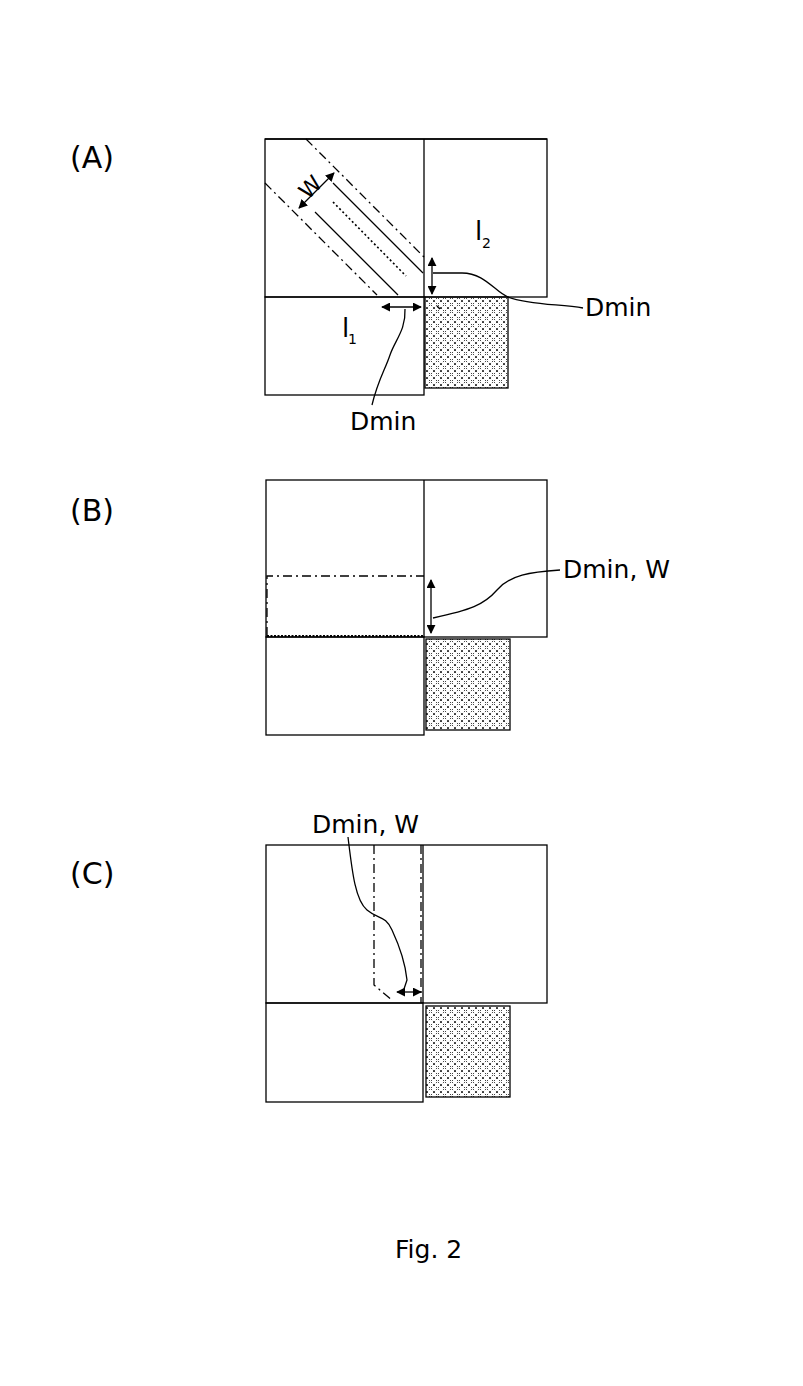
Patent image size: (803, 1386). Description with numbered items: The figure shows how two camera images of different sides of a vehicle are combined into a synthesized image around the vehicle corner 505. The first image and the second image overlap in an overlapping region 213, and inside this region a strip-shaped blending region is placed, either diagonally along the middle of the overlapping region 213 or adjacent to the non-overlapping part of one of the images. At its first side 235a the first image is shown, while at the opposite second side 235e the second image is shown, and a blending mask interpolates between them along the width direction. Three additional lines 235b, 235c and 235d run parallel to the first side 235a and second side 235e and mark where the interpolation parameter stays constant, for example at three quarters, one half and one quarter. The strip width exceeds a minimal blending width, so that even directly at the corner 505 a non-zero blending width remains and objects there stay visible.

The overlapping region 213 is at (347, 140).
The first side of the blending region 235a is at (320, 235).
The first additional line 235b is at (363, 262).
The second additional line 235c is at (398, 270).
The third additional line 235d is at (372, 217).
The second side of the blending region 235e is at (350, 177).
The corner of the vehicle 505 is at (438, 307).